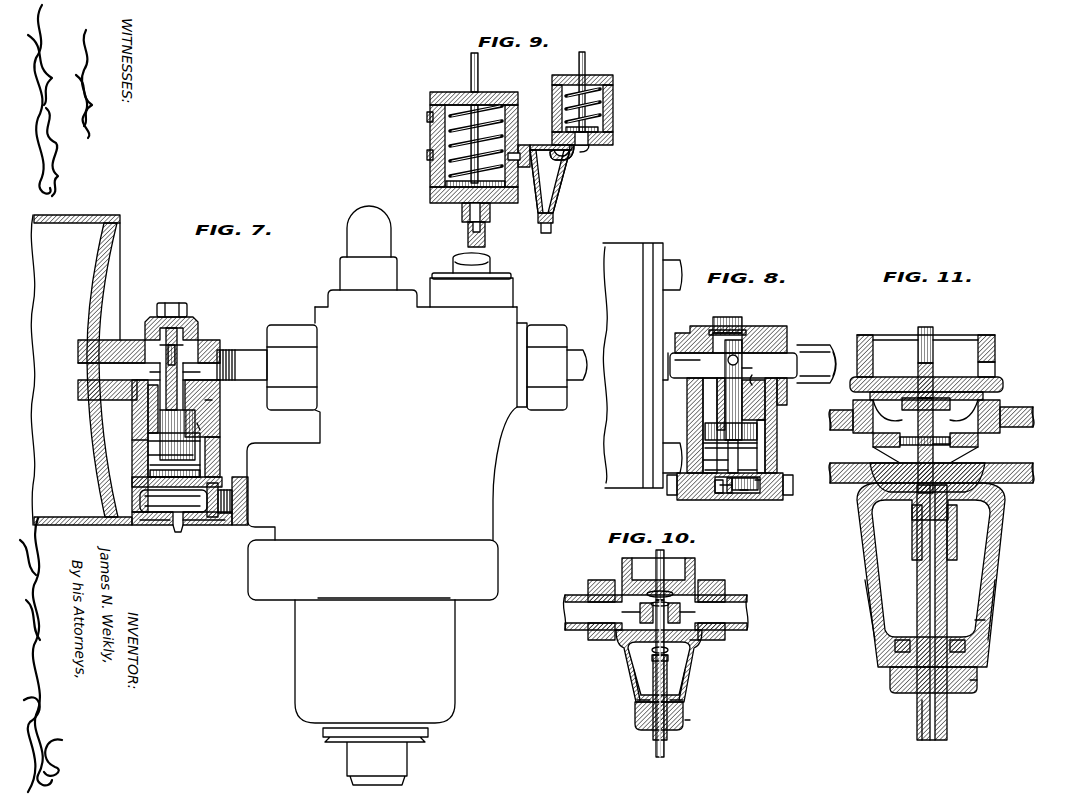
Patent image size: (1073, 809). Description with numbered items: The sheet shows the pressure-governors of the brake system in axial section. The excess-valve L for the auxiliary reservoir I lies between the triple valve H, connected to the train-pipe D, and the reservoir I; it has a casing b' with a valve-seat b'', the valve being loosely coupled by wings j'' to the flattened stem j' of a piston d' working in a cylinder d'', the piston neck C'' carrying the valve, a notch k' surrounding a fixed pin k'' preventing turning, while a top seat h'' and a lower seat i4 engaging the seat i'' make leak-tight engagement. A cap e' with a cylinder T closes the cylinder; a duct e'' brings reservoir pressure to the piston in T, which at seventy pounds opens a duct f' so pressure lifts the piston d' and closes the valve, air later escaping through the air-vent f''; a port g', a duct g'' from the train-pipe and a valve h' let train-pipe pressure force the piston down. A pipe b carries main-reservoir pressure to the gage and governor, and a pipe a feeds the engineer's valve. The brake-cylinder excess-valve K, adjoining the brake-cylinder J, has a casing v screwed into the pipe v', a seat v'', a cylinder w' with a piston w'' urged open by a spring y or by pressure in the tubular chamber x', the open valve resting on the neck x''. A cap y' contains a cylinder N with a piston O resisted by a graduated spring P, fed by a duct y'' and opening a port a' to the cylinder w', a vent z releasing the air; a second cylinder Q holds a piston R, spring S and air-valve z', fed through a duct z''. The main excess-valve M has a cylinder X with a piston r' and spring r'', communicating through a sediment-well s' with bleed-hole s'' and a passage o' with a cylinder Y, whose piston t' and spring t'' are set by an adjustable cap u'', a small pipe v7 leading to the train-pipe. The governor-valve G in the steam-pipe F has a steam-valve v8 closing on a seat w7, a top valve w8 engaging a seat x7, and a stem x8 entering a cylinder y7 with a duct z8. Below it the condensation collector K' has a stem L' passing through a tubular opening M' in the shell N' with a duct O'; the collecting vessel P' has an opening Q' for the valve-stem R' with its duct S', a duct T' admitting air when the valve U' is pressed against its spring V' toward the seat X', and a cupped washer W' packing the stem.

In FIG. 7, the auxiliary reservoir I is at (81, 370).
In FIG. 7, the pipe b is at (155, 441).
In FIG. 7, the casing b' is at (242, 343).
In FIG. 7, the valve-seat b'' is at (159, 329).
In FIG. 7, the excess-valve for the auxiliary reservoir L is at (176, 344).
In FIG. 7, the notch k' is at (196, 326).
In FIG. 7, the pin k'' is at (194, 327).
In FIG. 7, the flattened stem portion j' is at (198, 371).
In FIG. 7, the wings j'' is at (149, 370).
In FIG. 7, the piston stem C'' is at (175, 419).
In FIG. 7, the port g' is at (219, 421).
In FIG. 7, the duct g'' is at (224, 405).
In FIG. 7, the valve h' is at (220, 516).
In FIG. 7, the seat h'' is at (202, 441).
In FIG. 7, the seat i'' is at (194, 470).
In FIG. 7, the spring seat i4 is at (200, 460).
In FIG. 7, the cap e' is at (211, 511).
In FIG. 7, the duct e'' is at (123, 435).
In FIG. 7, the piston d' is at (149, 471).
In FIG. 7, the cylinder d'' is at (127, 453).
In FIG. 7, the duct f' is at (153, 498).
In FIG. 7, the air-vent f'' is at (194, 534).
In FIG. 7, the cylinder T is at (155, 536).
In FIG. 7, the triple valve H is at (407, 495).
In FIG. 7, the train-pipe D is at (576, 352).
In FIG. 7, the pipe v' is at (482, 261).
In FIG. 8, the pipe v' is at (819, 351).
In FIG. 9, the cylinder Y is at (445, 133).
In FIG. 9, the excess-valve for the train-pipe M is at (500, 72).
In FIG. 9, the adjustable cap u'' is at (493, 94).
In FIG. 9, the spring t'' is at (478, 144).
In FIG. 9, the piston t' is at (459, 181).
In FIG. 9, the small pipe v7 is at (487, 237).
In FIG. 9, the bleed-hole s'' is at (531, 147).
In FIG. 9, the cylinder w' is at (547, 156).
In FIG. 8, the cylinder w' is at (737, 401).
In FIG. 9, the sediment-well s' is at (550, 191).
In FIG. 9, the cylinder X is at (590, 106).
In FIG. 9, the spring r'' is at (601, 105).
In FIG. 9, the piston r' is at (598, 126).
In FIG. 8, the brake-cylinder J is at (642, 365).
In FIG. 8, the excess-valve for the brake-cylinder K is at (730, 413).
In FIG. 8, the casing v is at (744, 365).
In FIG. 8, the seat v'' is at (694, 363).
In FIG. 8, the tubular chamber x' is at (754, 367).
In FIG. 8, the neck x'' is at (767, 379).
In FIG. 8, the piston w'' is at (758, 432).
In FIG. 8, the duct z'' is at (757, 449).
In FIG. 8, the spring y is at (712, 431).
In FIG. 8, the cap y' is at (731, 456).
In FIG. 8, the pipe a is at (716, 460).
In FIG. 8, the port a' is at (747, 460).
In FIG. 8, the duct y'' is at (683, 481).
In FIG. 8, the second cylinder Q is at (794, 481).
In FIG. 8, the piston R is at (749, 481).
In FIG. 8, the spring S is at (733, 490).
In FIG. 8, the cylinder N is at (712, 495).
In FIG. 8, the piston O is at (725, 500).
In FIG. 8, the graduated spring P is at (734, 501).
In FIG. 8, the air-vent port z is at (749, 507).
In FIG. 8, the air-valve z' is at (766, 500).
In FIG. 10, the steam-pipe F is at (655, 611).
In FIG. 10, the governor-valve G is at (674, 629).
In FIG. 11, the governor-valve G is at (933, 409).
In FIG. 10, the cylinder y7 is at (636, 568).
In FIG. 11, the cylinder y7 is at (955, 350).
In FIG. 10, the stem x8 is at (667, 575).
In FIG. 11, the stem x8 is at (935, 338).
In FIG. 10, the stem L' is at (656, 596).
In FIG. 11, the stem L' is at (925, 416).
In FIG. 10, the seat w7 is at (623, 612).
In FIG. 11, the seat w7 is at (950, 437).
In FIG. 10, the valve v8 is at (692, 609).
In FIG. 11, the valve v8 is at (964, 412).
In FIG. 10, the tubular opening M' is at (657, 615).
In FIG. 11, the tubular opening M' is at (949, 456).
In FIG. 10, the passage o' is at (652, 651).
In FIG. 10, the valve U' is at (671, 654).
In FIG. 11, the valve U' is at (945, 532).
In FIG. 10, the shell N' is at (704, 649).
In FIG. 11, the shell N' is at (948, 483).
In FIG. 10, the condensation collector and discharger K' is at (626, 684).
In FIG. 11, the condensation collector and discharger K' is at (860, 601).
In FIG. 10, the spring V' is at (696, 685).
In FIG. 11, the spring V' is at (1003, 601).
In FIG. 10, the cupped washer W' is at (630, 702).
In FIG. 11, the cupped washer W' is at (905, 640).
In FIG. 10, the collecting vessel P' is at (689, 702).
In FIG. 11, the collecting vessel P' is at (992, 610).
In FIG. 10, the duct S' is at (653, 724).
In FIG. 11, the duct S' is at (933, 687).
In FIG. 10, the opening Q' is at (690, 734).
In FIG. 11, the opening Q' is at (984, 692).
In FIG. 10, the valve-stem R' is at (653, 682).
In FIG. 11, the valve-stem R' is at (914, 720).
In FIG. 11, the seat x7 is at (895, 350).
In FIG. 11, the duct z8 is at (998, 372).
In FIG. 11, the top valve w8 is at (887, 413).
In FIG. 11, the duct O' is at (911, 445).
In FIG. 11, the seat X' is at (931, 575).
In FIG. 11, the duct T' is at (948, 624).